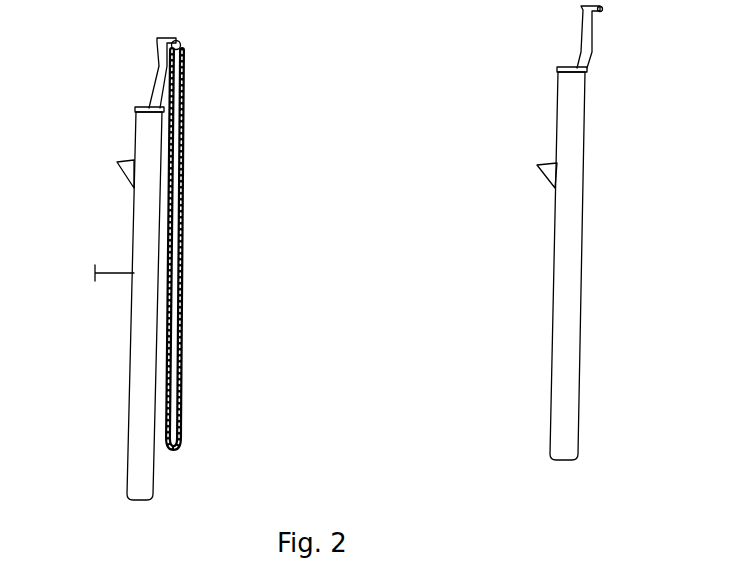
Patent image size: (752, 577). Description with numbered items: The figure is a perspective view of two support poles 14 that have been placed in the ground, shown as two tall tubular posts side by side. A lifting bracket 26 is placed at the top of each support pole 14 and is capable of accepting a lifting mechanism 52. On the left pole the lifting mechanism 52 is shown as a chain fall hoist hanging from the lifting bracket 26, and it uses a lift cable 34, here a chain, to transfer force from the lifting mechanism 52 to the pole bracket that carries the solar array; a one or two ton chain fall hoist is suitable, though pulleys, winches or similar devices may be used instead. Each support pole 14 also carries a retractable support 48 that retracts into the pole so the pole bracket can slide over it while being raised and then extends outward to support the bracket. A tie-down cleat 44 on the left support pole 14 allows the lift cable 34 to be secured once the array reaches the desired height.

The support pole 14 is at (137, 300).
The lifting bracket 26 is at (155, 90).
The lift cable 34 is at (190, 108).
The tie-down cleat 44 is at (95, 271).
The retractable support 48 is at (117, 162).
The lifting mechanism 52 is at (184, 46).